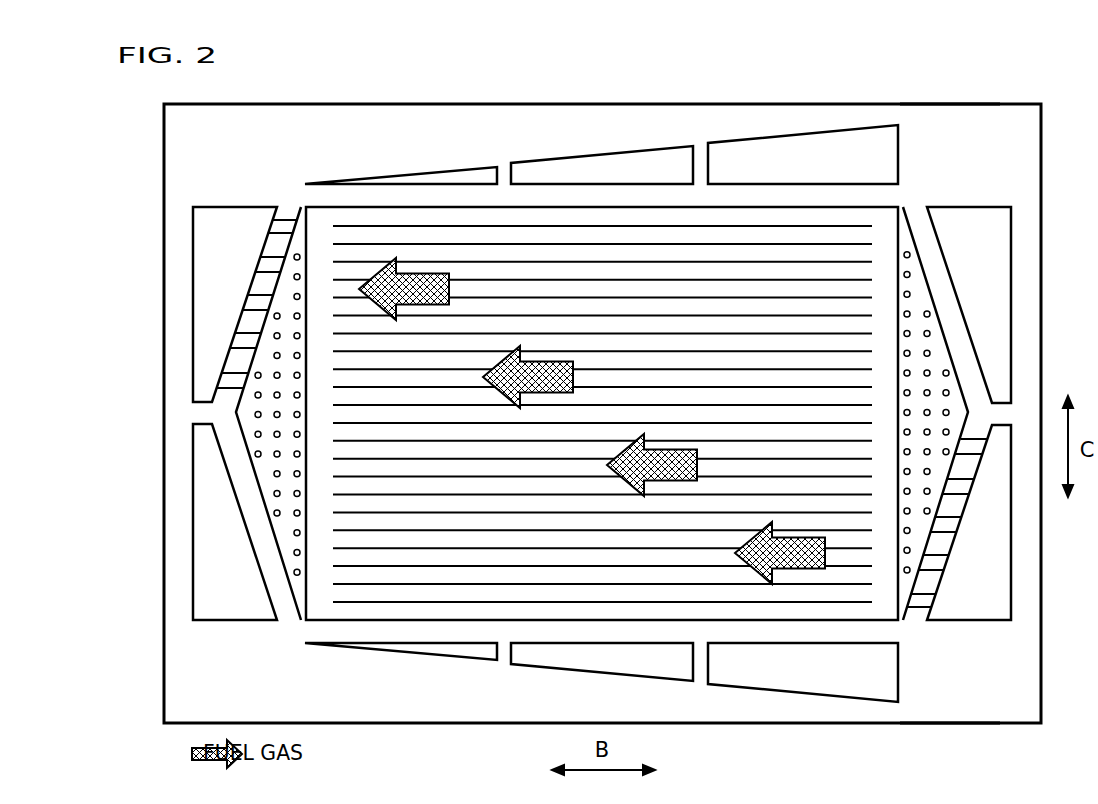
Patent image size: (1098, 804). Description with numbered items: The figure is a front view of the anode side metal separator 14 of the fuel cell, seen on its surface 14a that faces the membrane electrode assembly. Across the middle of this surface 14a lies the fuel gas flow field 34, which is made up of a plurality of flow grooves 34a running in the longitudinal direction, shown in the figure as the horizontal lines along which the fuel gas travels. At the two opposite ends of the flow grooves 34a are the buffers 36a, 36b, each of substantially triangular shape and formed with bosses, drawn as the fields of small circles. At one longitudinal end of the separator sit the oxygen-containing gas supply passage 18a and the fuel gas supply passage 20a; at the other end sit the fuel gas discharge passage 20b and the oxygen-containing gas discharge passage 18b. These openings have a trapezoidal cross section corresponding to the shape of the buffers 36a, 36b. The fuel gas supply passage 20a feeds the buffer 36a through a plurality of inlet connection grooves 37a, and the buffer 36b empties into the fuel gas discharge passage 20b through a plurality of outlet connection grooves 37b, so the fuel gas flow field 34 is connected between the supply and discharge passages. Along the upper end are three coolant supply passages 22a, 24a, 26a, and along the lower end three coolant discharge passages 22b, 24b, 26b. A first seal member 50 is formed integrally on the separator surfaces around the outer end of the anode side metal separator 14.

The anode side metal separator 14 is at (392, 87).
The surface 14a is at (955, 724).
The first seal member 50 is at (952, 103).
The fuel gas flow field 34 is at (602, 417).
The flow grooves 34a is at (463, 243).
The buffer 36a is at (920, 288).
The buffer 36b is at (287, 538).
The inlet connection grooves 37a is at (918, 603).
The outlet connection grooves 37b is at (287, 227).
The oxygen-containing gas supply passage 18a is at (969, 305).
The oxygen-containing gas discharge passage 18b is at (235, 522).
The fuel gas supply passage 20a is at (969, 522).
The fuel gas discharge passage 20b is at (235, 304).
The coolant supply passage 22a is at (803, 154).
The coolant discharge passage 22b is at (803, 672).
The coolant supply passage 24a is at (602, 165).
The coolant discharge passage 24b is at (602, 662).
The coolant supply passage 26a is at (467, 178).
The coolant discharge passage 26b is at (463, 651).